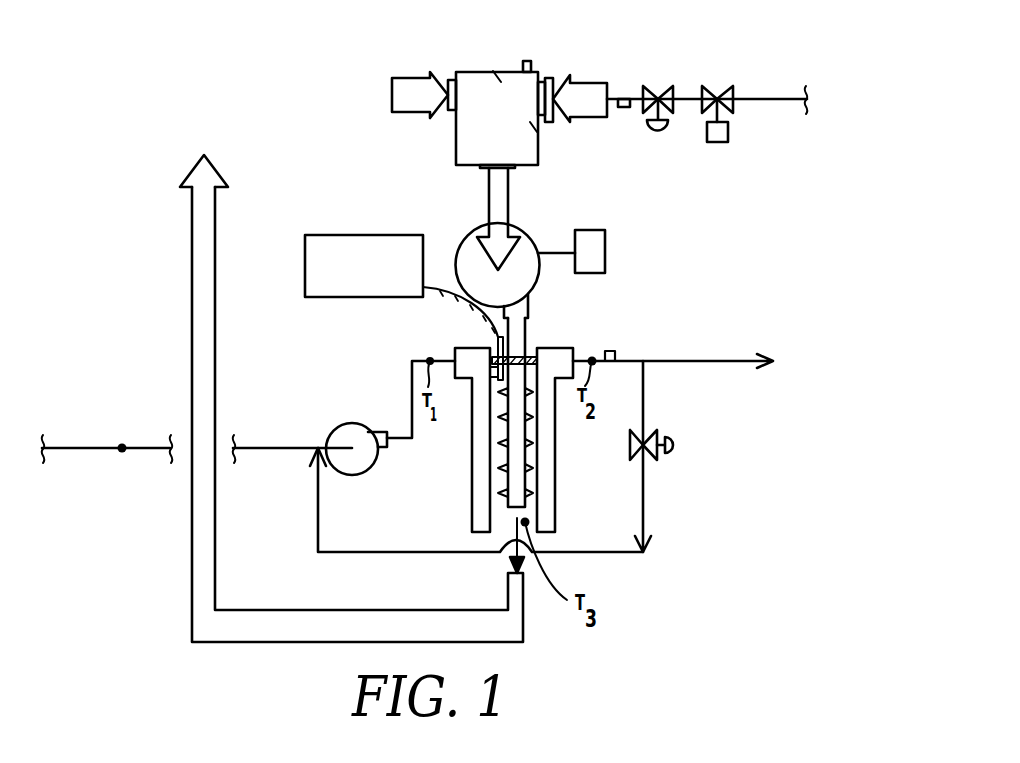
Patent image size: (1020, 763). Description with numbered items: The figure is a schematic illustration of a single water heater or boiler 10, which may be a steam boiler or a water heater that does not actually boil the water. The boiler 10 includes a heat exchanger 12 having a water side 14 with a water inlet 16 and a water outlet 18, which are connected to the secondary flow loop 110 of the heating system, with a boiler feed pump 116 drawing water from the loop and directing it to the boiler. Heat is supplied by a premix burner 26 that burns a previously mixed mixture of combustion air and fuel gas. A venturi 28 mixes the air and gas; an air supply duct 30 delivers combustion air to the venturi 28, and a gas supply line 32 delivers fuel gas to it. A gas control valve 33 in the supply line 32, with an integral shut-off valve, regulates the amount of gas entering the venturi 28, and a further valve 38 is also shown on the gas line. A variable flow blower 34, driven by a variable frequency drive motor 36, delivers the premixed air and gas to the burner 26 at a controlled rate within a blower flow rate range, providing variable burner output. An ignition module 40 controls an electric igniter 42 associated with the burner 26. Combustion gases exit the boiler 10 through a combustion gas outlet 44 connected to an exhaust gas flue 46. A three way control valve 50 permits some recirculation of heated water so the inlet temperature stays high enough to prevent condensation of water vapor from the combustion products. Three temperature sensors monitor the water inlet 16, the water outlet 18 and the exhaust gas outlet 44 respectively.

The boiler 10 is at (231, 130).
The heat exchanger 12 is at (467, 348).
The water side 14 is at (557, 348).
The water inlet 16 is at (450, 372).
The water outlet 18 is at (578, 358).
The burner 26 is at (516, 502).
The venturi 28 is at (510, 72).
The air supply duct 30 is at (410, 78).
The gas supply line 32 is at (593, 80).
The gas control valve 33 is at (723, 87).
The variable flow blower 34 is at (470, 248).
The variable frequency drive motor 36 is at (603, 230).
The gas valve 38 is at (666, 86).
The ignition module 40 is at (365, 235).
The electric igniter 42 is at (496, 345).
The combustion gas outlet 44 is at (502, 523).
The exhaust gas flue 46 is at (192, 233).
The three way control valve 50 is at (656, 458).
The secondary flow loop 110 is at (100, 448).
The boiler feed pump 116 is at (363, 458).